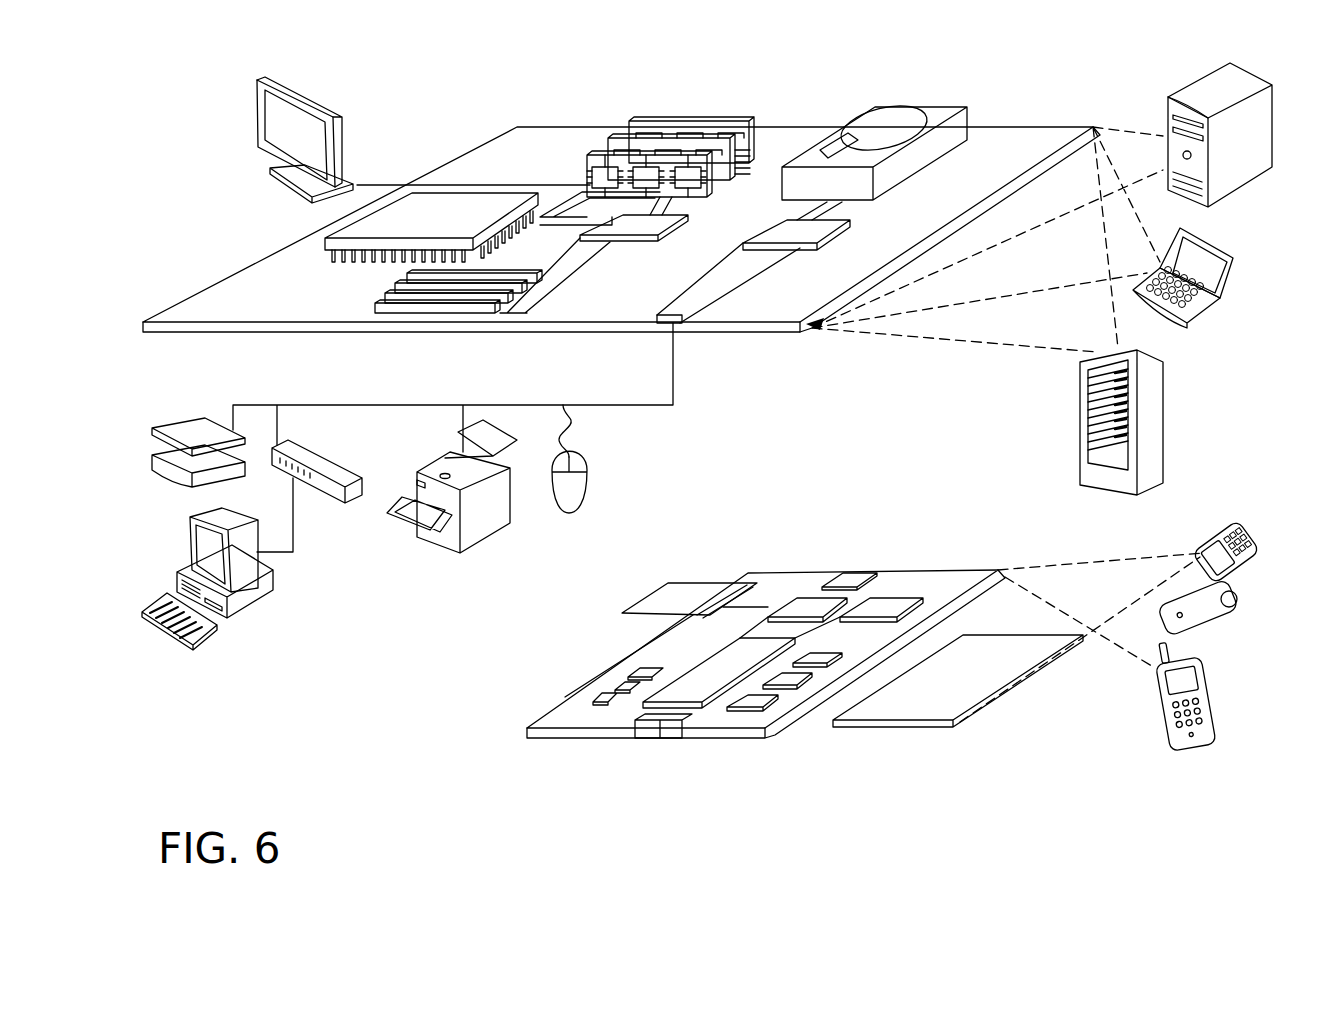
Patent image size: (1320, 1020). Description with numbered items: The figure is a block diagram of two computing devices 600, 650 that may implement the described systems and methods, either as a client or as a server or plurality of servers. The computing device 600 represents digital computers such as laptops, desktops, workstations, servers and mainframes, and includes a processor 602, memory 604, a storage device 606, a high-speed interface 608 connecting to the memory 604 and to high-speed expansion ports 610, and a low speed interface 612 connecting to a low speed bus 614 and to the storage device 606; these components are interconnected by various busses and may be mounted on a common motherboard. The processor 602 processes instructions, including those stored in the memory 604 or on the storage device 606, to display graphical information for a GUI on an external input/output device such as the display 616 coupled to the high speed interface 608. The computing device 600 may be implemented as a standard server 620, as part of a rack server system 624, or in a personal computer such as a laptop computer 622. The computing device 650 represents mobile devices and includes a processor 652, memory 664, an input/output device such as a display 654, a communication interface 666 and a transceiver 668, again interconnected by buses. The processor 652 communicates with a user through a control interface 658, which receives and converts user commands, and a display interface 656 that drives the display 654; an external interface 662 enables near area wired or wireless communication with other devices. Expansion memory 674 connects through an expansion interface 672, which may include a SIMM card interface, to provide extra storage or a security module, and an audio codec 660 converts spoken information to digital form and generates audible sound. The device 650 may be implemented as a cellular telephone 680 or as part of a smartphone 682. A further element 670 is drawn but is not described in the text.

The computing device 600 is at (446, 100).
The processor 602 is at (330, 241).
The memory 604 is at (630, 153).
The storage device 606 is at (870, 105).
The high-speed interface 608 is at (612, 226).
The high-speed expansion ports 610 is at (400, 297).
The low speed interface 612 is at (780, 227).
The low speed bus 614 is at (698, 328).
The display 616 is at (266, 76).
The standard server 620 is at (1167, 112).
The laptop computer 622 is at (1232, 255).
The rack server system 624 is at (1080, 447).
The computing device 650 is at (504, 735).
The processor 652 is at (694, 695).
The display 654 is at (922, 713).
The display interface 656 is at (758, 702).
The control interface 658 is at (795, 683).
The audio codec 660 is at (822, 663).
The external interface 662 is at (660, 728).
The memory 664 is at (612, 690).
The communication interface 666 is at (808, 604).
The transceiver 668 is at (885, 606).
The small component 670 is at (857, 572).
The expansion interface 672 is at (740, 583).
The expansion memory 674 is at (672, 583).
The cellular telephone 680 is at (1213, 522).
The smartphone 682 is at (1162, 700).